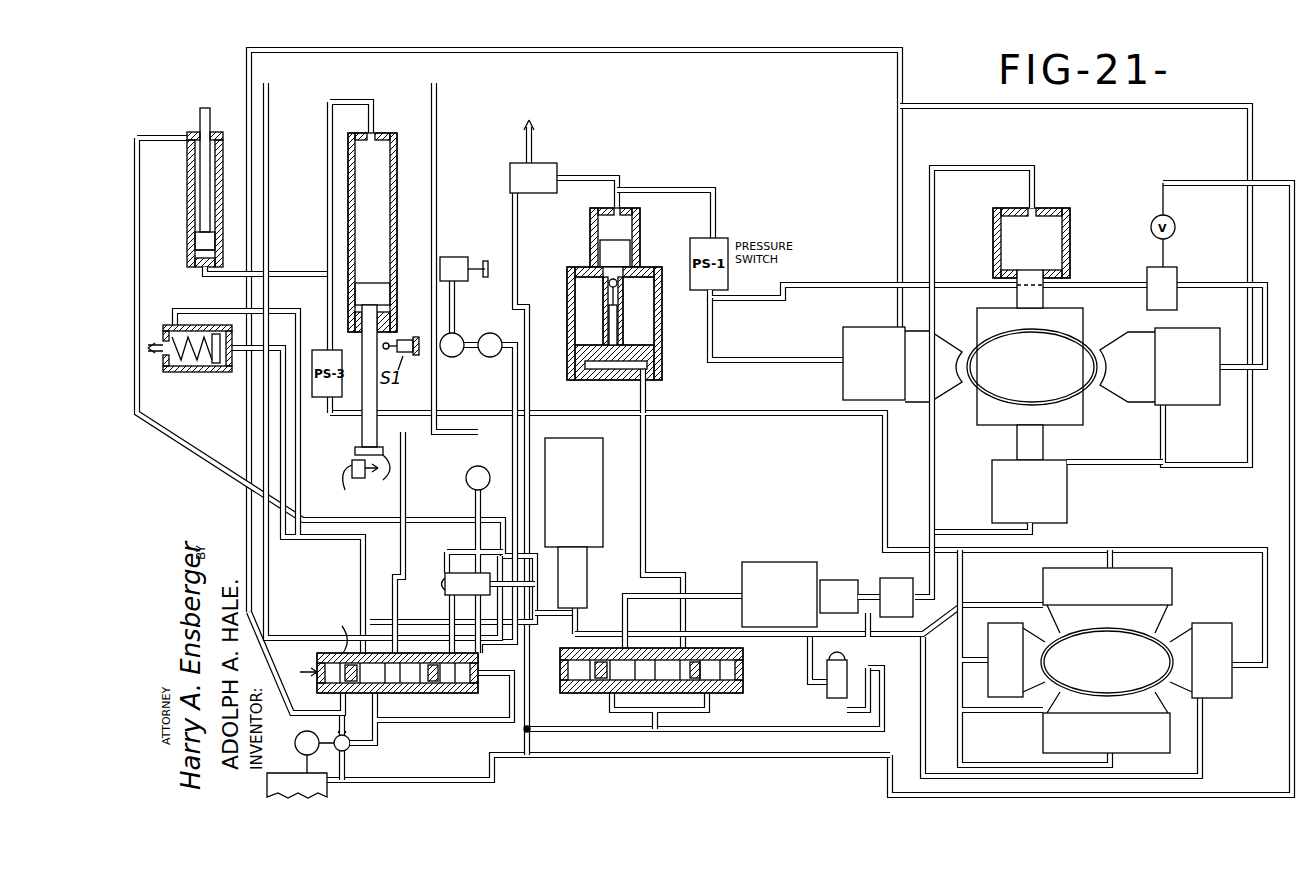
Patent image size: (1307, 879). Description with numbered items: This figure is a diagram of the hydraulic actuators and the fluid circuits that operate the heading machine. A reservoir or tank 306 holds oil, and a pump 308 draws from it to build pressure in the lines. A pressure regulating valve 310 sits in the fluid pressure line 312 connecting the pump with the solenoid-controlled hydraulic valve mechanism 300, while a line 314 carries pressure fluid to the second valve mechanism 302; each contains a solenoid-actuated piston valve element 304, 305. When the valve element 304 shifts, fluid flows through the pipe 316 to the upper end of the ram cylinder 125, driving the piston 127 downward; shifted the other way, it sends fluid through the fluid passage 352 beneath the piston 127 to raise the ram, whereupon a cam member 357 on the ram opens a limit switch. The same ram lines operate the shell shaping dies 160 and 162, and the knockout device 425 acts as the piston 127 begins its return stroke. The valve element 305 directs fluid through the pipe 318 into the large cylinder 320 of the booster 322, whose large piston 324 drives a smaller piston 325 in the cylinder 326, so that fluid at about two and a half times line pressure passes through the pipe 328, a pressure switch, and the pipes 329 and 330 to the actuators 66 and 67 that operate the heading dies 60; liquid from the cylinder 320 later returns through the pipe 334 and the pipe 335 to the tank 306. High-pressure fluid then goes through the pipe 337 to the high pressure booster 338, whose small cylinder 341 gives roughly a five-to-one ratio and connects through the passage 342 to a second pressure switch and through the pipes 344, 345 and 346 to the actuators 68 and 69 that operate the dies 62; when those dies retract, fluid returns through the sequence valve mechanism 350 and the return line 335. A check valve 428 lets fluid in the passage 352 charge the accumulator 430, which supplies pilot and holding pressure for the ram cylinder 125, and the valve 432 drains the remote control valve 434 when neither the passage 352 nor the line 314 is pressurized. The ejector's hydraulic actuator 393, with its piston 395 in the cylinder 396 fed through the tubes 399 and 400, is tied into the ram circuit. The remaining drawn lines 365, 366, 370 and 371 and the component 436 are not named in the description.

The heading dies 60 is at (925, 371).
The dies 62 is at (1052, 329).
The hydraulic actuator 66 is at (843, 400).
The hydraulic actuator 67 is at (1192, 405).
The hydraulic actuator 68 is at (1067, 500).
The hydraulic actuator 69 is at (1070, 214).
The ram cylinder 125 is at (393, 200).
The piston 127 is at (372, 290).
The shell shaping die 160 is at (1042, 634).
The shell shaping die 162 is at (1165, 615).
The solenoid-controlled hydraulic valve mechanism 300 is at (388, 700).
The solenoid-controlled hydraulic valve mechanism 302 is at (745, 695).
The piston valve element 304 is at (346, 712).
The piston valve element 305 is at (668, 622).
The reservoir 306 is at (327, 792).
The pump 308 is at (296, 752).
The pressure regulating valve 310 is at (350, 750).
The fluid pressure line 312 is at (378, 745).
The line 314 is at (540, 735).
The pipe 316 is at (352, 540).
The pipe 318 is at (647, 478).
The large cylinder 320 is at (660, 336).
The booster 322 is at (572, 358).
The piston 324 is at (583, 345).
The smaller piston 325 is at (632, 272).
The cylinder 326 is at (598, 238).
The pipe 328 is at (716, 203).
The pipe 329 is at (818, 288).
The pipe 330 is at (758, 366).
The pipe 334 is at (790, 733).
The return line 335 is at (835, 760).
The pipe 337 is at (618, 592).
The high pressure booster 338 is at (742, 568).
The small cylinder 341 is at (826, 582).
The passage 342 is at (866, 595).
The pipe 344 is at (926, 580).
The pipe 345 is at (982, 522).
The pipe 346 is at (936, 446).
The valve mechanism 350 is at (836, 698).
The fluid passage 352 is at (408, 538).
The cam member 357 is at (383, 478).
The outer circuit line 365 is at (1250, 141).
The main frame line 366 is at (903, 138).
The clamp circuit line 370 is at (995, 270).
The clamp return line 371 is at (1132, 450).
The hydraulic actuator 393 is at (186, 196).
The piston 395 is at (195, 242).
The cylinder 396 is at (240, 133).
The tube 399 is at (149, 143).
The tube 400 is at (222, 280).
The knockout device 425 is at (235, 385).
The check valve 428 is at (507, 559).
The accumulator 430 is at (595, 512).
The valve 432 is at (453, 362).
The remote control valve 434 is at (470, 250).
The relief valve block 436 is at (563, 186).